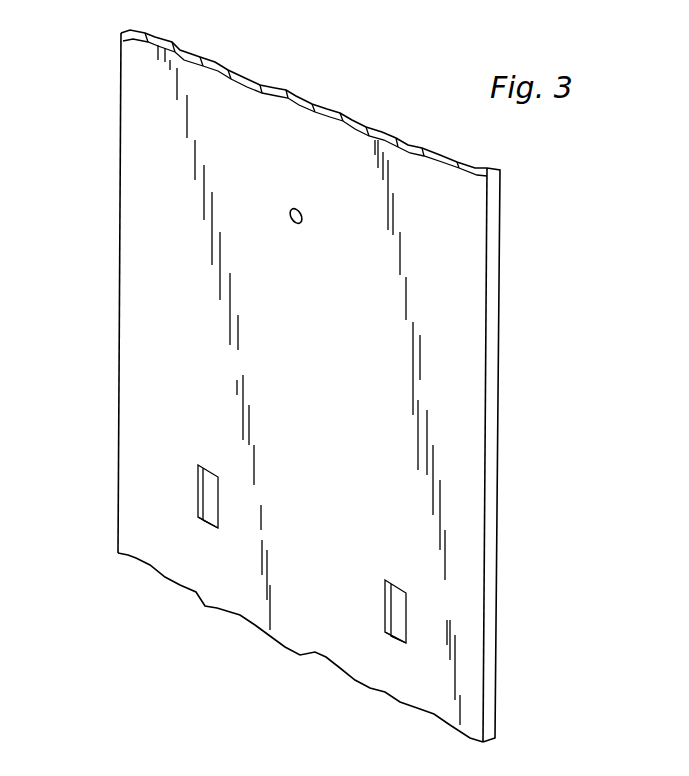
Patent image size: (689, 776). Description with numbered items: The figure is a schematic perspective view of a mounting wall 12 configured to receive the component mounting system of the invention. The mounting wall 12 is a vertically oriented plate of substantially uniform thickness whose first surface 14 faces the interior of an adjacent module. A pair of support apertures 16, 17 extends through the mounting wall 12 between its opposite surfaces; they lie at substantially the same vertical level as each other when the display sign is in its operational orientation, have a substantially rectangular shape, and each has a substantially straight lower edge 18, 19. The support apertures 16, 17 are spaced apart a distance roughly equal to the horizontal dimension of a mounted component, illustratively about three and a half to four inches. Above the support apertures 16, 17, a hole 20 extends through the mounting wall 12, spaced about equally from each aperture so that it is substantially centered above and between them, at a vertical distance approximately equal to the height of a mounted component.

The mounting wall 12 is at (497, 443).
The first surface 14 is at (145, 438).
The support aperture 16 is at (198, 492).
The support aperture 17 is at (386, 596).
The lower edge 18 is at (206, 519).
The lower edge 19 is at (404, 634).
The hole 20 is at (302, 212).